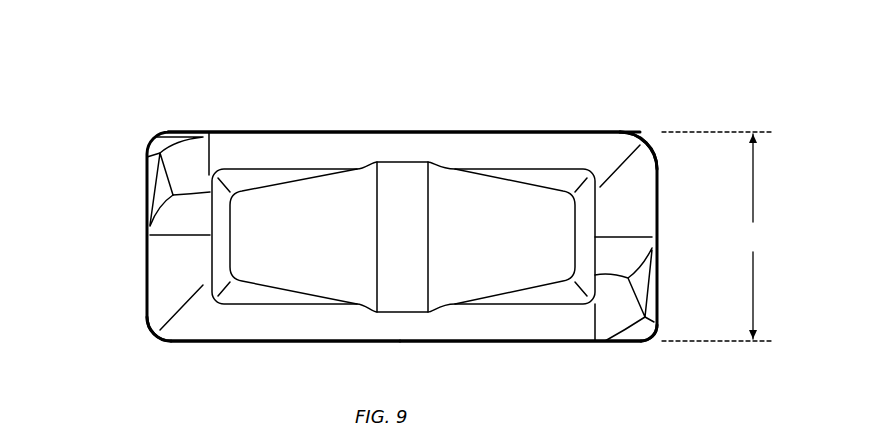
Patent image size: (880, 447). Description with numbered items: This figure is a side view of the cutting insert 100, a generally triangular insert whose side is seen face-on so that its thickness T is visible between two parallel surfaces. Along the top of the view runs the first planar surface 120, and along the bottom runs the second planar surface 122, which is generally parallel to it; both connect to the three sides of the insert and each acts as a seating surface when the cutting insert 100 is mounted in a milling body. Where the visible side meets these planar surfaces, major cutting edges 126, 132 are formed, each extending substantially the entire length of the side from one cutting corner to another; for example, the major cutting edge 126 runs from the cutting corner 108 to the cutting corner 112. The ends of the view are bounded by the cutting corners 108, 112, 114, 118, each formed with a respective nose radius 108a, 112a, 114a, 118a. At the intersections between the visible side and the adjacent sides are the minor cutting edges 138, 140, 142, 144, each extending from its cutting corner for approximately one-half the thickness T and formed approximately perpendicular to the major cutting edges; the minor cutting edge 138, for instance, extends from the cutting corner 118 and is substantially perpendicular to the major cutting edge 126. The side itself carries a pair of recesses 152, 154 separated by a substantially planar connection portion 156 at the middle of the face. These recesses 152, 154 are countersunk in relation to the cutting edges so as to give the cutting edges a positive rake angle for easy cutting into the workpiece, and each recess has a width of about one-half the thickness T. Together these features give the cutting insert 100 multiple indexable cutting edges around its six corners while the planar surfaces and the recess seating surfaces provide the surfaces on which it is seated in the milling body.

The cutting insert 100 is at (652, 42).
The cutting corner 108 is at (152, 335).
The nose radius 108a is at (160, 343).
The cutting corner 112 is at (651, 347).
The nose radius 112a is at (642, 344).
The cutting corner 114 is at (146, 118).
The nose radius 114a is at (163, 133).
The cutting corner 118 is at (655, 129).
The nose radius 118a is at (652, 131).
The first planar surface 120 is at (527, 342).
The second planar surface 122 is at (409, 131).
The major cutting edge 126 is at (337, 342).
The major cutting edge 132 is at (497, 131).
The minor cutting edge 138 is at (146, 272).
The minor cutting edge 140 is at (146, 178).
The minor cutting edge 142 is at (657, 292).
The minor cutting edge 144 is at (657, 197).
The recess 152 is at (313, 210).
The recess 154 is at (542, 212).
The connection portion 156 is at (393, 183).
The thickness T is at (717, 236).